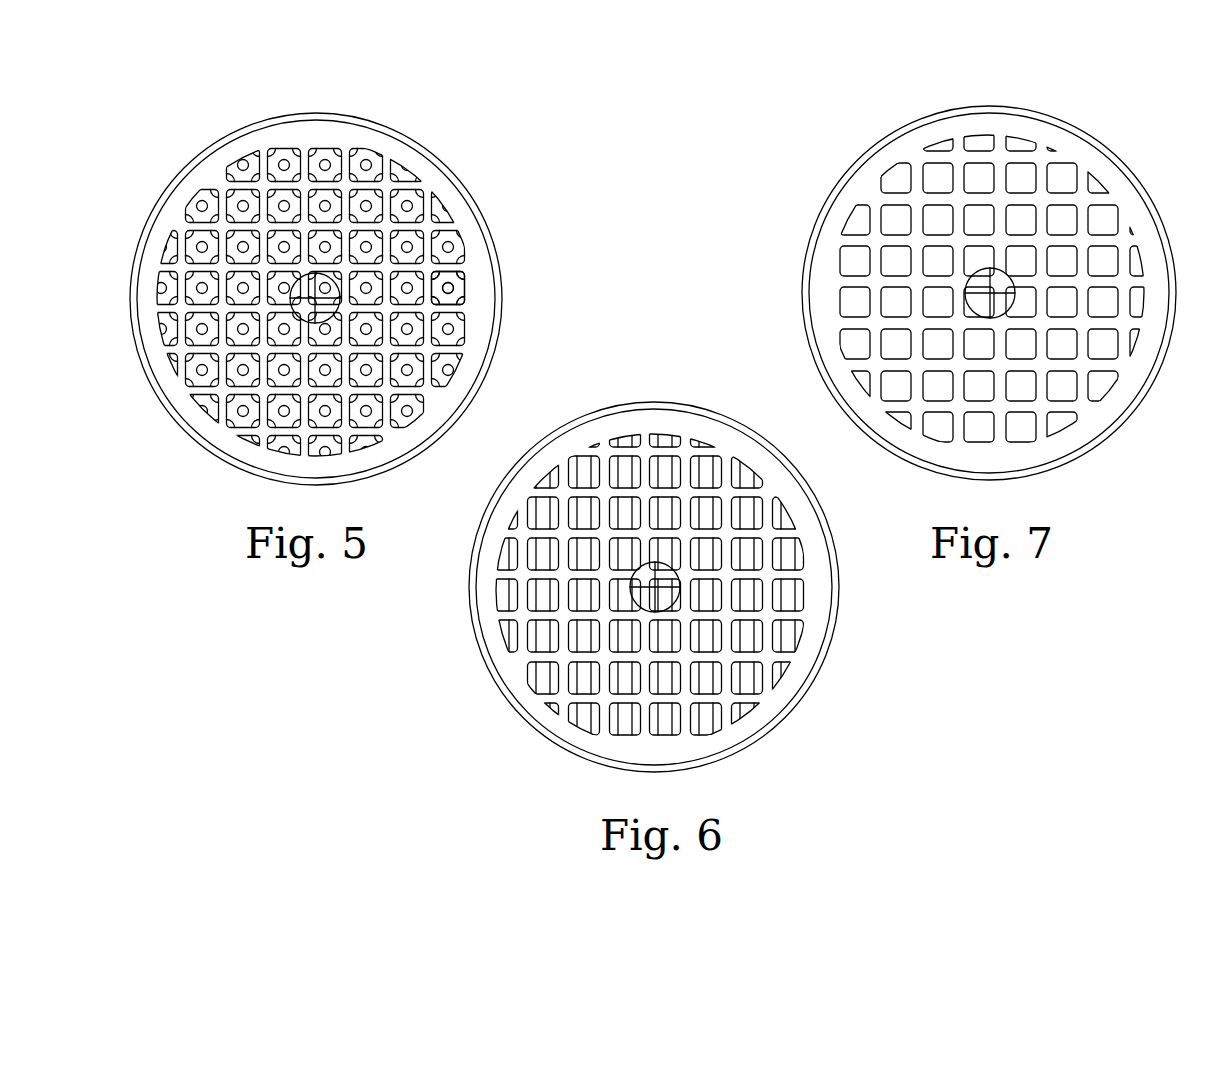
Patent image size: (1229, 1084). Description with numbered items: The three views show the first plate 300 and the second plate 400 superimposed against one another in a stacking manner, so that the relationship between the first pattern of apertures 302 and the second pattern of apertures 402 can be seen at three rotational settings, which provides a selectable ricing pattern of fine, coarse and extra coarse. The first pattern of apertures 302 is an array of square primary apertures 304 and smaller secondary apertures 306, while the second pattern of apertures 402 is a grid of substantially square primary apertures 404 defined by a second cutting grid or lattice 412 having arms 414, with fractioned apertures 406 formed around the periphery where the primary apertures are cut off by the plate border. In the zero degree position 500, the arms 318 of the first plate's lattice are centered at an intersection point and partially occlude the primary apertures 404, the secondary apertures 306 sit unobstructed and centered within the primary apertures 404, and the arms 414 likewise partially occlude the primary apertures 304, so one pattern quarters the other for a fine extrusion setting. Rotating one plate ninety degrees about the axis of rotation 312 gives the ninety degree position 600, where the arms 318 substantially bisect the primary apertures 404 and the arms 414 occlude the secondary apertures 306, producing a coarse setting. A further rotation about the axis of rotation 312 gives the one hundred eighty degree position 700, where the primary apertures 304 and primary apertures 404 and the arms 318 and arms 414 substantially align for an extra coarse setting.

In FIG. 5, the first plate 300 is at (337, 162).
In FIG. 6, the first plate 300 is at (540, 638).
In FIG. 5, the first pattern of apertures 302 is at (187, 275).
In FIG. 6, the first pattern of apertures 302 is at (724, 472).
In FIG. 5, the primary apertures 304 is at (315, 300).
In FIG. 5, the secondary apertures 306 is at (452, 287).
In FIG. 5, the axis of rotation 312 is at (418, 278).
In FIG. 6, the axis of rotation 312 is at (633, 587).
In FIG. 7, the axis of rotation 312 is at (990, 283).
In FIG. 5, the arms 318 is at (447, 300).
In FIG. 6, the arms 318 is at (584, 470).
In FIG. 5, the second plate 400 is at (285, 128).
In FIG. 6, the second plate 400 is at (654, 587).
In FIG. 7, the second plate 400 is at (985, 122).
In FIG. 5, the second pattern of apertures 402 is at (467, 328).
In FIG. 6, the second pattern of apertures 402 is at (790, 675).
In FIG. 7, the second pattern of apertures 402 is at (890, 222).
In FIG. 7, the primary apertures 404 is at (853, 267).
In FIG. 7, the fractioned apertures 406 is at (857, 222).
In FIG. 5, the second cutting grid or lattice 412 is at (387, 185).
In FIG. 6, the second cutting grid or lattice 412 is at (645, 450).
In FIG. 7, the second cutting grid or lattice 412 is at (998, 157).
In FIG. 5, the arms 414 is at (240, 162).
In FIG. 6, the arms 414 is at (683, 470).
In FIG. 7, the arms 414 is at (1040, 180).
In FIG. 5, the 0 degree position 500 is at (210, 456).
In FIG. 6, the 90 degree position 600 is at (614, 768).
In FIG. 7, the 180 degree position 700 is at (1093, 450).